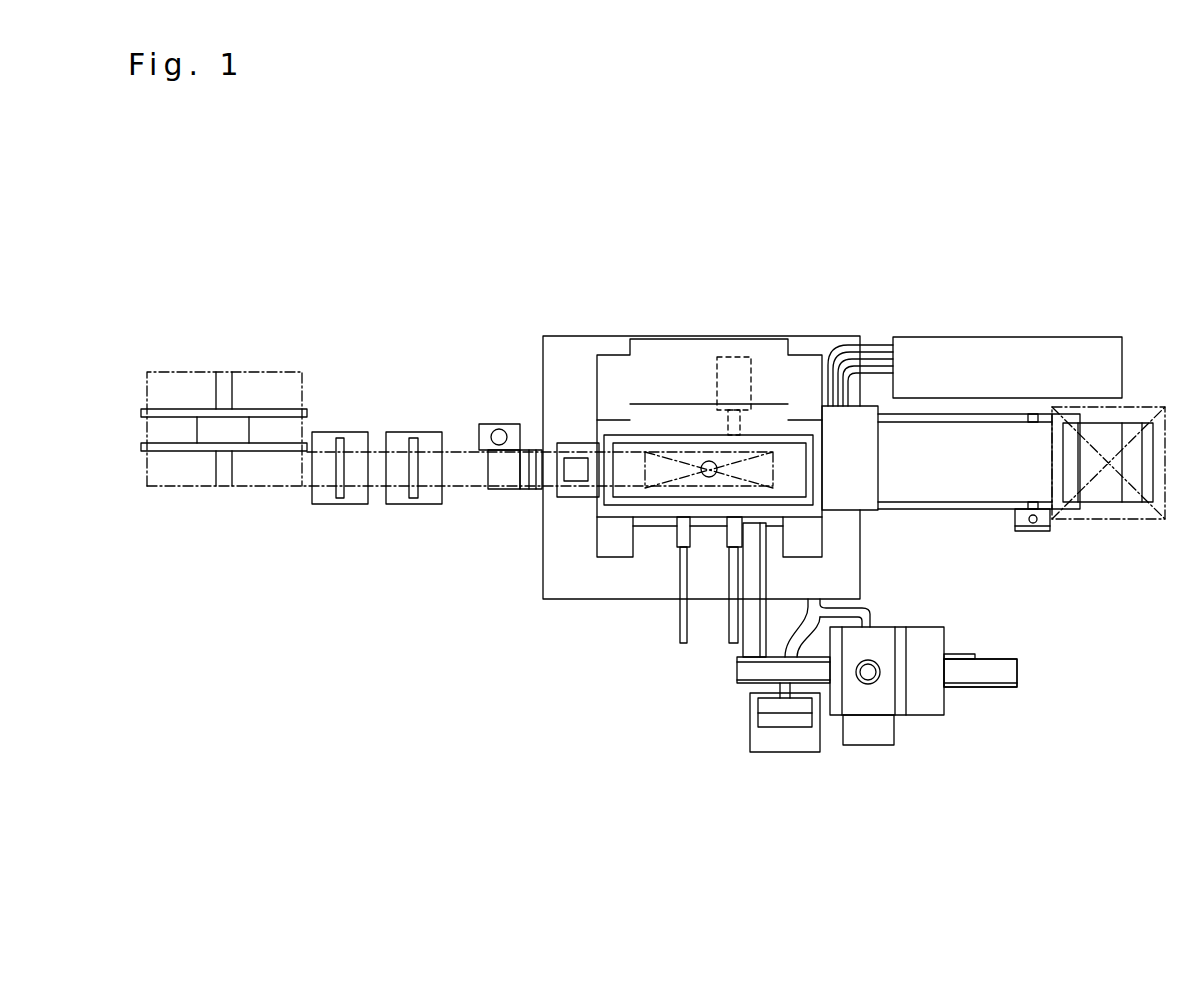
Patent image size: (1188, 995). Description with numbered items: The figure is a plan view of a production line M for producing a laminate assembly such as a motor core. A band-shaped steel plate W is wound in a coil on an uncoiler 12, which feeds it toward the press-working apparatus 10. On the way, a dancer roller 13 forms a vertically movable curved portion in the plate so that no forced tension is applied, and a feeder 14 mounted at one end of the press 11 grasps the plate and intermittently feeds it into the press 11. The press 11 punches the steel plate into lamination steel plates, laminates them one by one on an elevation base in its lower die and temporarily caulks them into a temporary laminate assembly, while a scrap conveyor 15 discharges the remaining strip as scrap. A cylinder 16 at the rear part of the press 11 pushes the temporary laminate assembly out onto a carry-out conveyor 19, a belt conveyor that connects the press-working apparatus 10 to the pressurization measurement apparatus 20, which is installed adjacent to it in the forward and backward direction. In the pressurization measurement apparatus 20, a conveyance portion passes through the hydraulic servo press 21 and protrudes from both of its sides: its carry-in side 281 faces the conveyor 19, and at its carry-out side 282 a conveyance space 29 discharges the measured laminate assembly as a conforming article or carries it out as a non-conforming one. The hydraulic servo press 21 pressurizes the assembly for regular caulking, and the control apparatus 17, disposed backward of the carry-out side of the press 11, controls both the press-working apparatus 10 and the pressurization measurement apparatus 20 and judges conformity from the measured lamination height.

The production line M is at (704, 250).
The band-shaped steel plate W is at (274, 477).
The press-working apparatus 10 is at (531, 348).
The press 11 is at (613, 346).
The uncoiler 12 is at (226, 362).
The dancer roller 13 is at (413, 421).
The feeder 14 is at (572, 434).
The scrap conveyor 15 is at (892, 439).
The cylinder 16 is at (739, 345).
The control apparatus 17 is at (1010, 335).
The carry-out conveyor 19 is at (746, 612).
The pressurization measurement apparatus 20 is at (731, 693).
The hydraulic servo press 21 is at (903, 728).
The carry-in side 281 is at (753, 678).
The carry-out side 282 is at (988, 698).
The conveyance space 29 is at (1002, 672).